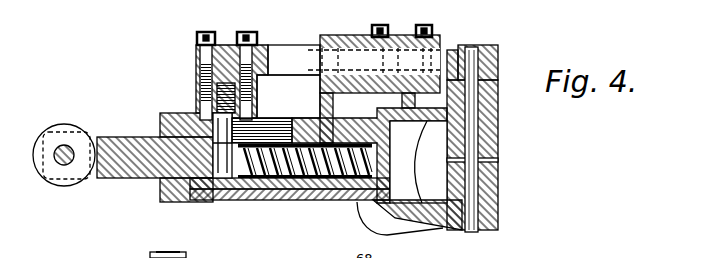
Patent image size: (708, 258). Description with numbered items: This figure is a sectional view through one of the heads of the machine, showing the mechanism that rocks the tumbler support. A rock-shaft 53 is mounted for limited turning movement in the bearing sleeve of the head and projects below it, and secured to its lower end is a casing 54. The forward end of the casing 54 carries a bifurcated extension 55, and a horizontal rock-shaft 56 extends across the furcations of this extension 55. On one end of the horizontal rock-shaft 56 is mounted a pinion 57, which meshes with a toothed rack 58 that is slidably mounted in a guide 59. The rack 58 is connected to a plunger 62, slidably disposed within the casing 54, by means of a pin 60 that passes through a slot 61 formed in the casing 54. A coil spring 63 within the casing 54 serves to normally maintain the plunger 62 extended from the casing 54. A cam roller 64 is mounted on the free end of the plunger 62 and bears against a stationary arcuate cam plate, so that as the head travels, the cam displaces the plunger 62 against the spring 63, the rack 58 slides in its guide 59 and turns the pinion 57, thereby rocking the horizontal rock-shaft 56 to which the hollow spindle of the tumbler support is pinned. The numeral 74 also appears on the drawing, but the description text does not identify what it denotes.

The rock-shaft 53 is at (168, 252).
The casing 54 is at (283, 200).
The bifurcated extension 55 is at (423, 222).
The horizontal rock-shaft 56 is at (467, 145).
The pinion 57 is at (496, 60).
The toothed rack 58 is at (289, 57).
The guide 59 is at (396, 38).
The pin 60 is at (213, 113).
The slot 61 is at (273, 128).
The plunger 62 is at (129, 140).
The coil spring 63 is at (357, 130).
The cam roller 64 is at (58, 130).
The member 74 is at (223, 251).